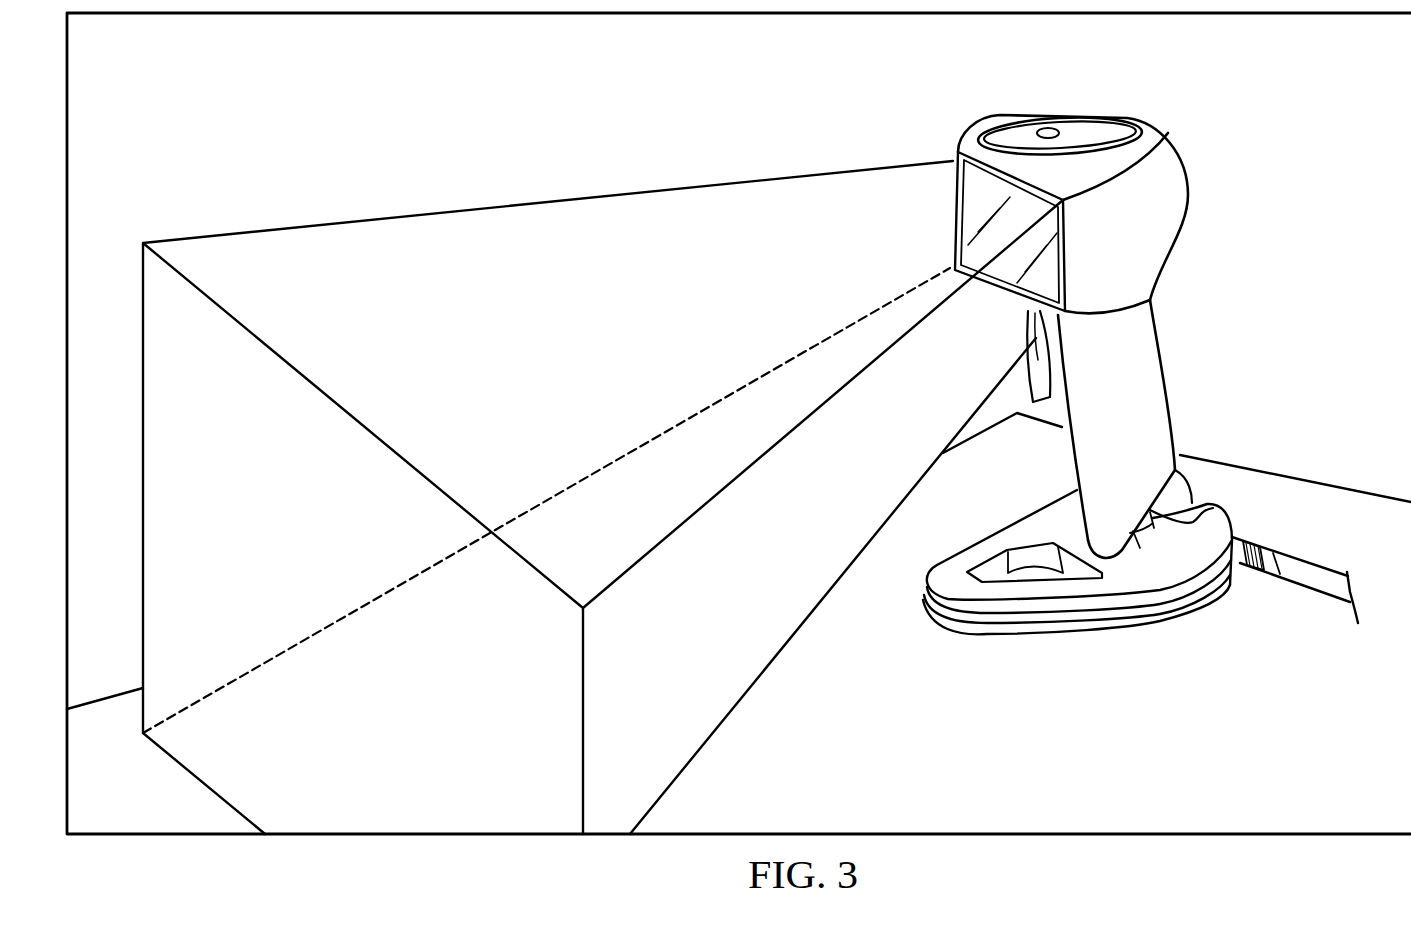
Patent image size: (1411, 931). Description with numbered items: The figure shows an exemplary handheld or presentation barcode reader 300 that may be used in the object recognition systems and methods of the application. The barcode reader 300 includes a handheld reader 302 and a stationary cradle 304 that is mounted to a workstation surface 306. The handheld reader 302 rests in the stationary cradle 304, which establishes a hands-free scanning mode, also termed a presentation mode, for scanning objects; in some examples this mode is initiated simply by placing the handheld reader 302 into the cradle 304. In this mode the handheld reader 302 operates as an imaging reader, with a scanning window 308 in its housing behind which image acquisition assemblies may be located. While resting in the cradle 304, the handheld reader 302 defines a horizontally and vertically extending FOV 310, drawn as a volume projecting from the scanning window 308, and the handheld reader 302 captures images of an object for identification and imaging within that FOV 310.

The handheld or presentation barcode reader 300 is at (1212, 73).
The handheld reader 302 is at (1181, 167).
The stationary cradle 304 is at (1137, 588).
The workstation surface 306 is at (1292, 493).
The scanning window 308 is at (980, 193).
The FOV 310 is at (458, 211).